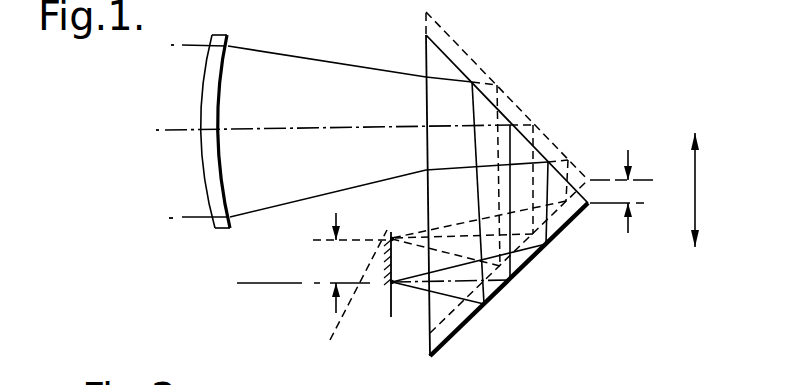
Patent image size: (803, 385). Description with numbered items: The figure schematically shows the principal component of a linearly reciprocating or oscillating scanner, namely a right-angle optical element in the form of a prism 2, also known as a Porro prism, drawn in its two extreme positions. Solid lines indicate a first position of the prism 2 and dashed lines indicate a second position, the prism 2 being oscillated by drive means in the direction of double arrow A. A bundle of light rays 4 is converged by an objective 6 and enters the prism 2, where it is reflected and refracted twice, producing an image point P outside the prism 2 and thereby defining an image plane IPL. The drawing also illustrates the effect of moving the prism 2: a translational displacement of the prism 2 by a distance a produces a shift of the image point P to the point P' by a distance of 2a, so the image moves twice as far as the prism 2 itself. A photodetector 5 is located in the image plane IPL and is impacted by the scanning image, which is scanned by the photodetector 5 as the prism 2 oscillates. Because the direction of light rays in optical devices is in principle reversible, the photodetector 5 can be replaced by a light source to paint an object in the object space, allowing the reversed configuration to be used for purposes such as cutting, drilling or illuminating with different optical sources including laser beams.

The prism 2 is at (528, 262).
The bundle of light rays 4 is at (315, 58).
The photodetector 5 is at (349, 292).
The objective 6 is at (193, 97).
The image point P is at (364, 330).
The shifted image point P' is at (394, 213).
The image plane IPL is at (392, 318).
The prism displacement distance a is at (623, 190).
The image point shift distance 2a is at (335, 257).
The double arrow A is at (711, 190).